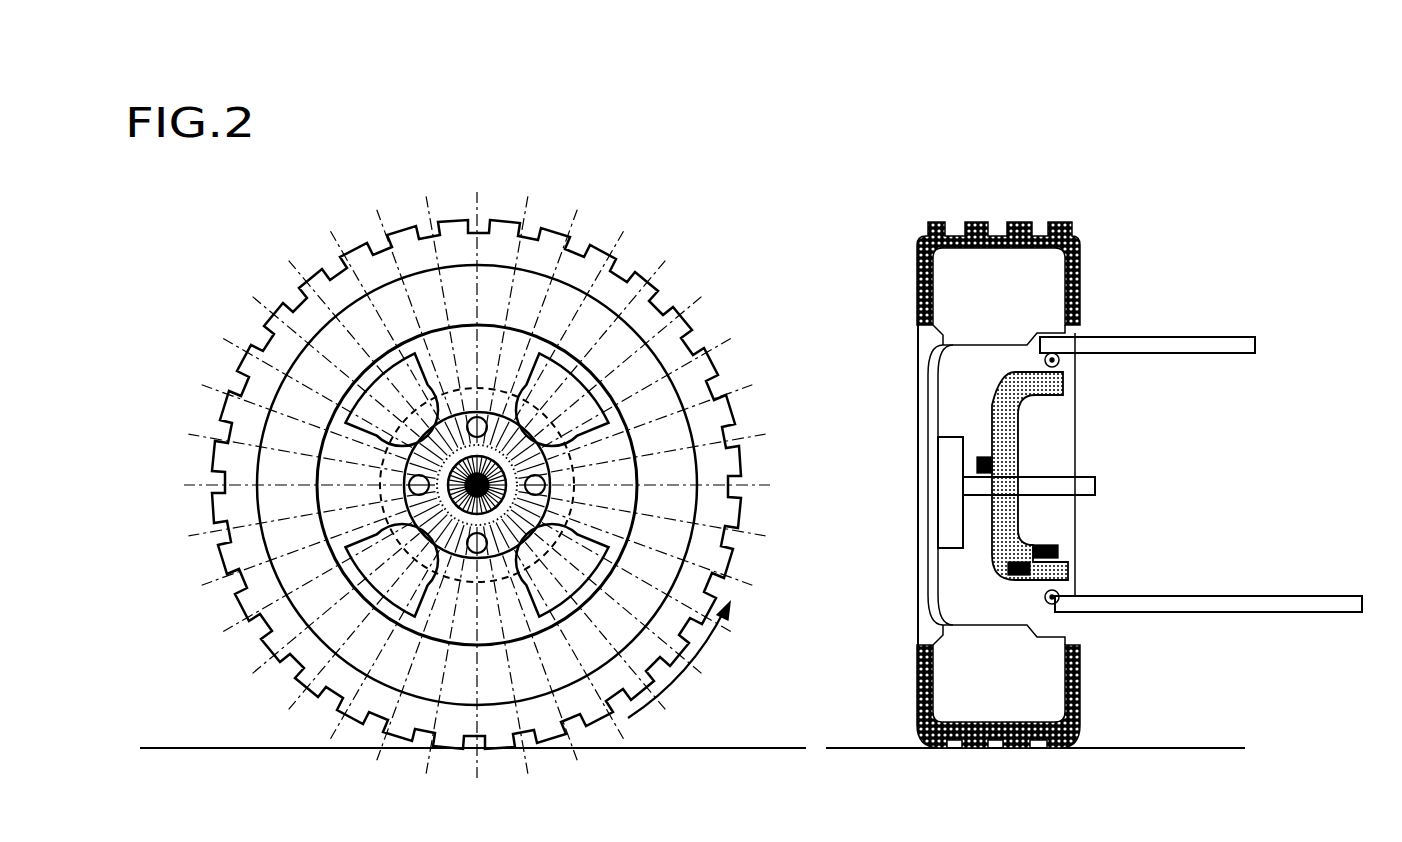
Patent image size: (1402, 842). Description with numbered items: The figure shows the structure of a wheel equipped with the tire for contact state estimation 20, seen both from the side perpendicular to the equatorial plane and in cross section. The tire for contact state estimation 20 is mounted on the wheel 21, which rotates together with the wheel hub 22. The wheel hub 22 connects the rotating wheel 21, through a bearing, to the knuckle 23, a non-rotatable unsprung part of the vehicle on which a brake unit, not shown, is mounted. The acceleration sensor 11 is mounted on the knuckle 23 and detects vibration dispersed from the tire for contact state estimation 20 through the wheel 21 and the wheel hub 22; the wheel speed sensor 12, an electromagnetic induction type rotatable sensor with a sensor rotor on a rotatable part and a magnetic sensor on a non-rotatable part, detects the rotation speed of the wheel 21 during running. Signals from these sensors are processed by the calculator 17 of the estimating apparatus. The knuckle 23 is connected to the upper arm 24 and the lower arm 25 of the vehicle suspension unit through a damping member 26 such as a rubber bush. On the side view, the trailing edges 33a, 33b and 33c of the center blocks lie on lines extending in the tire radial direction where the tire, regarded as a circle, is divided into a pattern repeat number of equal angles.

The tire for contact state estimation 20 is at (494, 262).
The wheel 21 is at (522, 350).
The wheel hub 22 is at (702, 296).
The trailing edge of the block 33a is at (257, 353).
The trailing edge of the block 33b is at (276, 313).
The trailing edge of the block 33c is at (314, 286).
The knuckle 23 is at (1023, 423).
The wheel speed sensor 12 is at (978, 458).
The calculator 17 is at (1058, 548).
The acceleration sensor 11 is at (1000, 572).
The upper arm 24 is at (1195, 338).
The lower arm 25 is at (1215, 597).
The damping member 26 is at (1057, 356).